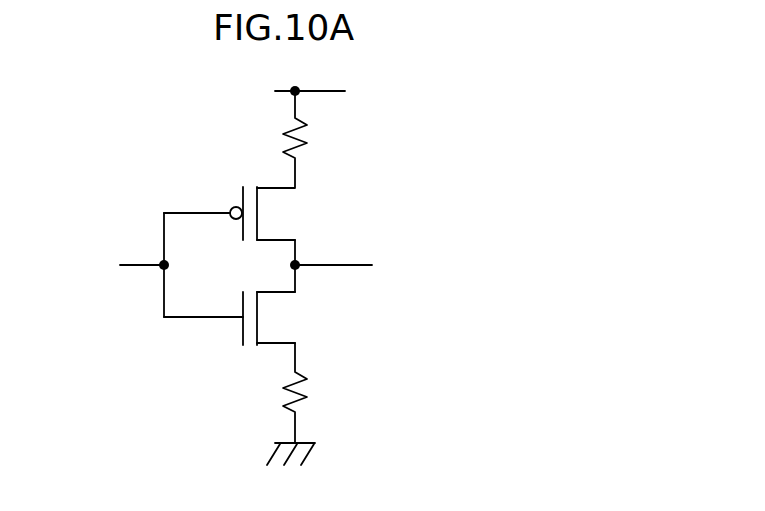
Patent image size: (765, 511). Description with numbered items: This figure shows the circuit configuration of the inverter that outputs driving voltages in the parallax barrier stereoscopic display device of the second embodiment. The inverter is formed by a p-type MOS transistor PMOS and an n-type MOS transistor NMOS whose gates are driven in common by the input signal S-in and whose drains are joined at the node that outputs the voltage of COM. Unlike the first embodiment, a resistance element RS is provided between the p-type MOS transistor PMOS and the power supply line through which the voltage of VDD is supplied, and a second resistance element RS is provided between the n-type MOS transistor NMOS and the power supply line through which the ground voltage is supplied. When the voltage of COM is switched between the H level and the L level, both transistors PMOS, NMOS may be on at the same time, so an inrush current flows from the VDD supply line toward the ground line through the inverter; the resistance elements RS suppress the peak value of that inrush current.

The power supply voltage VDD is at (314, 80).
The resistance element RS is at (303, 151).
The p-type MOS transistor PMOS is at (241, 190).
The n-type MOS transistor NMOS is at (243, 337).
The input signal S-in is at (112, 265).
The output voltage of the inverter COM is at (360, 267).